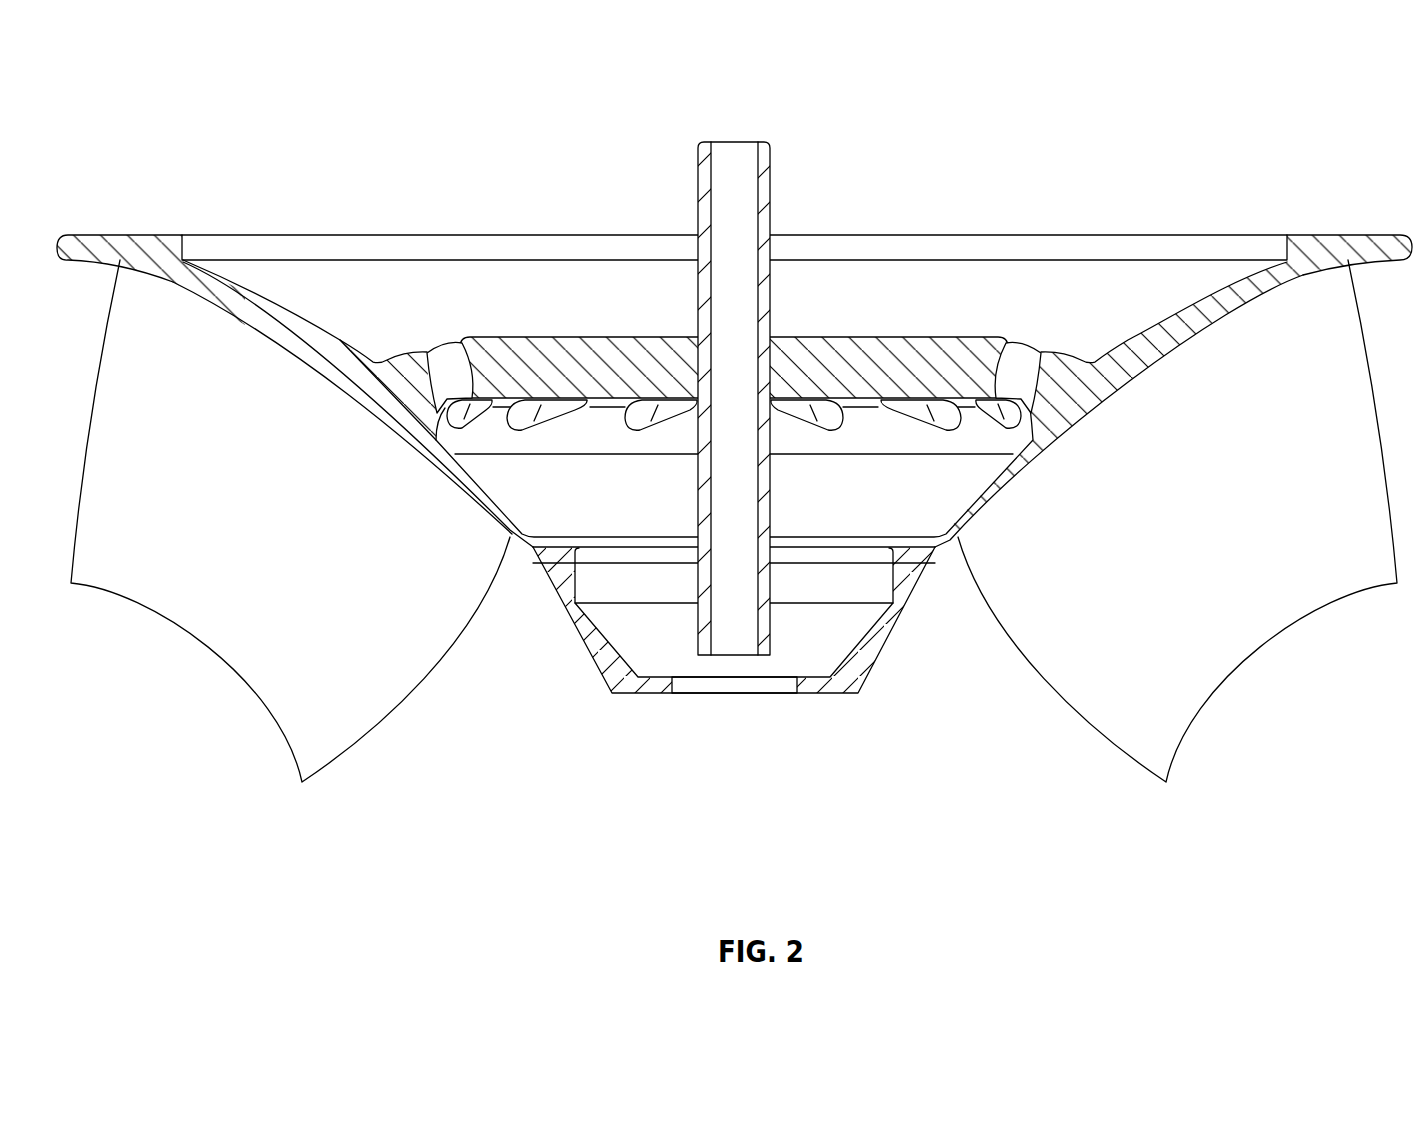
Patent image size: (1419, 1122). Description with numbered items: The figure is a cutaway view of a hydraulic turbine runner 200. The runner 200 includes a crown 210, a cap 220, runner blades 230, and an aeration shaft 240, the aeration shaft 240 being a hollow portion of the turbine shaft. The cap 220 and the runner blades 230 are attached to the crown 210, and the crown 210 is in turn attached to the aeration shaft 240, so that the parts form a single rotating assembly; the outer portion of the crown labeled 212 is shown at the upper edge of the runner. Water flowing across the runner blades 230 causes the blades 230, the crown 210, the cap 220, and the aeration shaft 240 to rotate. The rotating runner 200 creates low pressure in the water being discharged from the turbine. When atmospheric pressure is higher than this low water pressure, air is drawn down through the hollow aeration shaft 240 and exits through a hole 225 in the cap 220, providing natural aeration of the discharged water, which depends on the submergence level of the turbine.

The hydraulic turbine runner 200 is at (167, 89).
The crown 210 is at (470, 245).
The flange 212 is at (1398, 236).
The cap 220 is at (610, 678).
The hole 225 is at (791, 702).
The runner blades 230 is at (272, 537).
The aeration shaft 240 is at (762, 168).